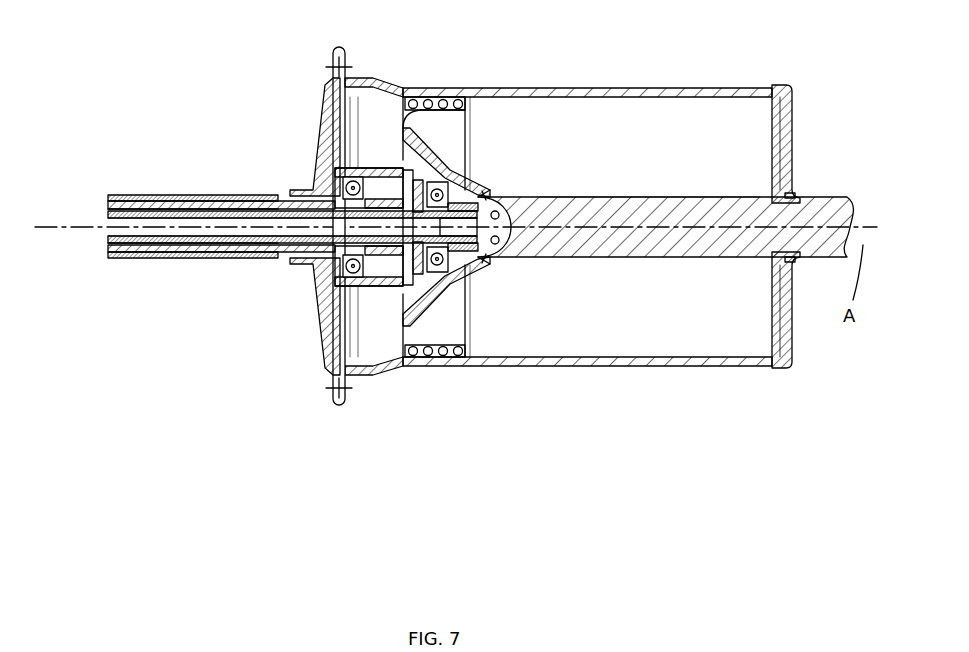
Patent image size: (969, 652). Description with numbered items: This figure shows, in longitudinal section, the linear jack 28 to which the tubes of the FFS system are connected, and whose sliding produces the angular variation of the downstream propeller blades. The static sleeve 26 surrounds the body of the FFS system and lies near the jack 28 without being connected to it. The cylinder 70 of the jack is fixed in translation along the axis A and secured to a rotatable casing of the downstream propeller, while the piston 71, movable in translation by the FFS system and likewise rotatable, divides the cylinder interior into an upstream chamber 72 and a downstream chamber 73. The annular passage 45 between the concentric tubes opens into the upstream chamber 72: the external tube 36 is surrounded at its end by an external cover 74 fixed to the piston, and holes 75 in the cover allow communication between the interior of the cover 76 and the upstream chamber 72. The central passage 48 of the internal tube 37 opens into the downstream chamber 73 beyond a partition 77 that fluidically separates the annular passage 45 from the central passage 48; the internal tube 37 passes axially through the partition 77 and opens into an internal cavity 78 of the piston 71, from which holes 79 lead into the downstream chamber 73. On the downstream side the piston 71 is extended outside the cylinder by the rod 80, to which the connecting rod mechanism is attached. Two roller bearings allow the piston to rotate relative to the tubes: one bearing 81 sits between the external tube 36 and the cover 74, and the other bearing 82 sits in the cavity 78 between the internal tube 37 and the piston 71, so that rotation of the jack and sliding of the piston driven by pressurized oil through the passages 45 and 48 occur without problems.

The sleeve 26 is at (221, 155).
The jack 28 is at (609, 80).
The external tube 36 is at (292, 169).
The internal tube 37 is at (274, 269).
The annular passage 45 is at (128, 209).
The central passage 48 is at (140, 233).
The cylinder 70 is at (607, 366).
The piston 71 is at (427, 360).
The upstream chamber 72 is at (380, 117).
The downstream chamber 73 is at (668, 150).
The external cover 74 is at (370, 185).
The holes 75 is at (385, 283).
The interior of the cover 76 is at (370, 187).
The partition 77 is at (425, 190).
The internal cavity 78 is at (478, 205).
The holes 79 is at (500, 260).
The rod 80 is at (652, 245).
The bearing 81 is at (353, 267).
The bearing 82 is at (437, 260).